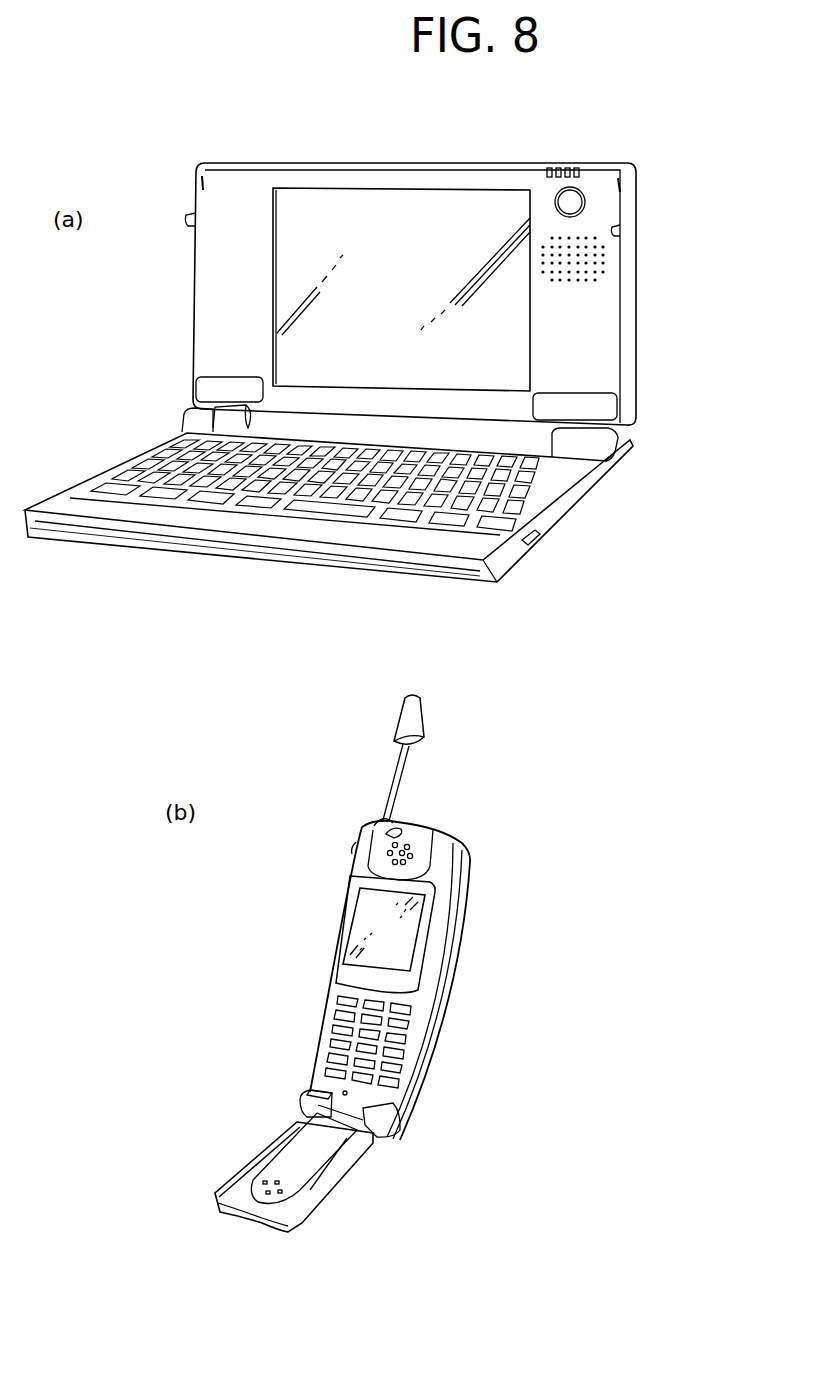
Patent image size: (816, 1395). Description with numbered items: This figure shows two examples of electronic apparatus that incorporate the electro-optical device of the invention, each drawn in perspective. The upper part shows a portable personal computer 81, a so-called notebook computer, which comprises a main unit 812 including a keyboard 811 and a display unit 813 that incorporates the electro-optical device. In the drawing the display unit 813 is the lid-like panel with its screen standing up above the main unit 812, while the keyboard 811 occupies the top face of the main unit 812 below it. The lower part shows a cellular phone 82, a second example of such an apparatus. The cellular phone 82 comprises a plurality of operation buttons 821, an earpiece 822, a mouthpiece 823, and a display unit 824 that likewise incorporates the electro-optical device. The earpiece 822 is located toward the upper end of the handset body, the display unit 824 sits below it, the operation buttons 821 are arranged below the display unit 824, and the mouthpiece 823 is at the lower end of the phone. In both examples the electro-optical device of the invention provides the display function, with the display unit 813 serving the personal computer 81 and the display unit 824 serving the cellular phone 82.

The personal computer 81 is at (652, 165).
The keyboard 811 is at (547, 493).
The main unit 812 is at (175, 541).
The display unit 813 is at (362, 210).
The cellular phone 82 is at (518, 828).
The operation buttons 821 is at (392, 1062).
The earpiece 822 is at (390, 857).
The mouthpiece 823 is at (263, 1183).
The display unit 824 is at (370, 923).